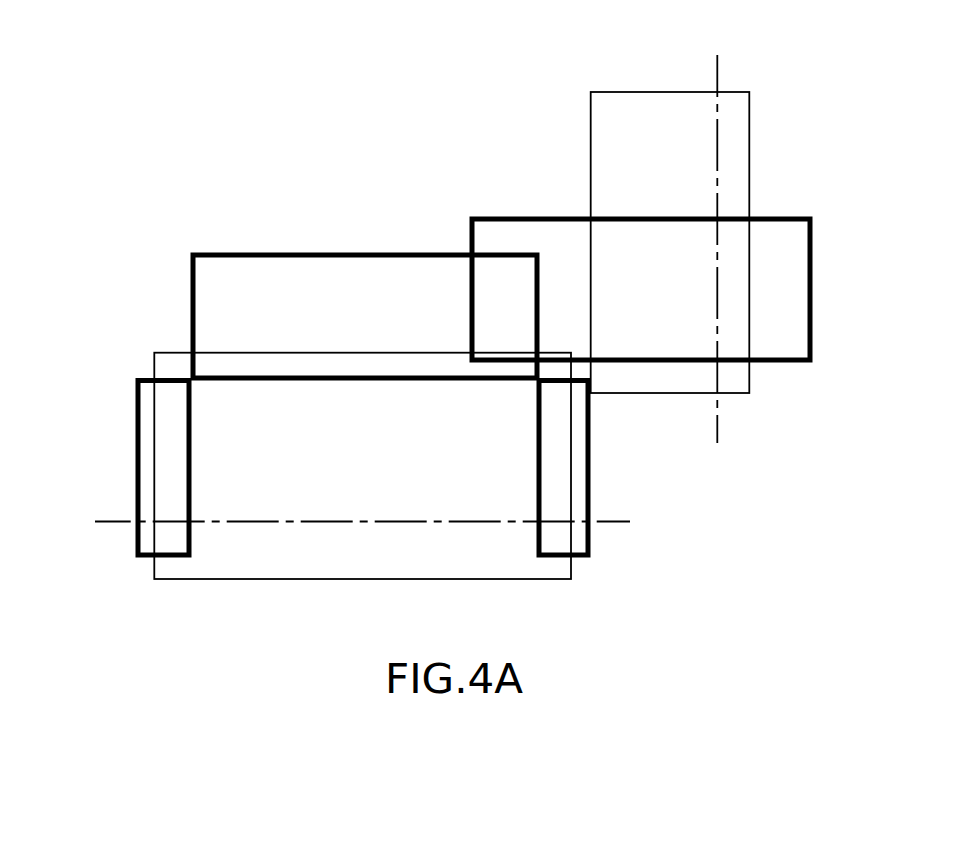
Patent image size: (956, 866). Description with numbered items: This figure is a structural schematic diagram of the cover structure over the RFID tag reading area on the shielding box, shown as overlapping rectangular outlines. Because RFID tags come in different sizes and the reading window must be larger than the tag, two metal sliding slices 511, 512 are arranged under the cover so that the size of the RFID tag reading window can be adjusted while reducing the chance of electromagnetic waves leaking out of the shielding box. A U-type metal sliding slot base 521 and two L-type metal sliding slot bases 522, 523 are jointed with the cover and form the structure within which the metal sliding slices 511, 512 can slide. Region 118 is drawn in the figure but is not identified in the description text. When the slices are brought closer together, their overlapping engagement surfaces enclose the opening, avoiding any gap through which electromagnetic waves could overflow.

The light emitting diode chip 118 is at (325, 305).
The metal sliding slice 511 is at (320, 565).
The metal sliding slice 512 is at (522, 235).
The U-type metal sliding slot base 521 is at (645, 177).
The L-type metal sliding slot base 522 is at (147, 493).
The L-type metal sliding slot base 523 is at (583, 470).